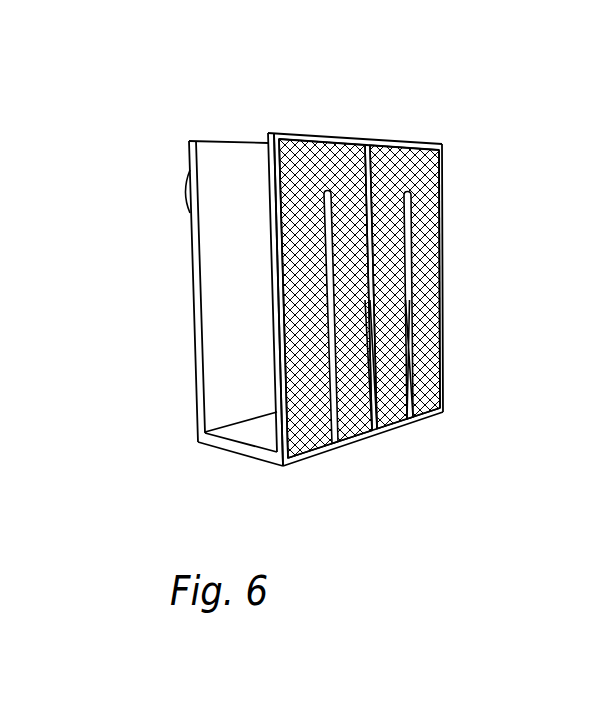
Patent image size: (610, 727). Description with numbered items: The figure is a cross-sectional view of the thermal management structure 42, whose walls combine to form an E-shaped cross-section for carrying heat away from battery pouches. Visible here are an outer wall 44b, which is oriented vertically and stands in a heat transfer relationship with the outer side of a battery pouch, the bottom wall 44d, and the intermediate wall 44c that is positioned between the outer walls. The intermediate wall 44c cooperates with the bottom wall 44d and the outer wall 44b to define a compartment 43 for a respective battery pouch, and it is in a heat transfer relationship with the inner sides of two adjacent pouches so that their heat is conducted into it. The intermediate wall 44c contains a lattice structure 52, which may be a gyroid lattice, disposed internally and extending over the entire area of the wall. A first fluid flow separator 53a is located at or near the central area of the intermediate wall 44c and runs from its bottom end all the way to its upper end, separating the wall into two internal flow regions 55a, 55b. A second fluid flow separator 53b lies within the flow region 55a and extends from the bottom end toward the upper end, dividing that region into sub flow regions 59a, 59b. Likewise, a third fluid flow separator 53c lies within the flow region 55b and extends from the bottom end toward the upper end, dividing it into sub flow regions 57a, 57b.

The thermal management structure 42 is at (280, 118).
The compartment 43 is at (228, 276).
The outer wall 44b is at (203, 150).
The intermediate wall 44c is at (398, 138).
The bottom wall 44d is at (235, 443).
The lattice structure 52 is at (337, 158).
The fluid flow separator 53a is at (372, 392).
The fluid flow separator 53b is at (332, 412).
The fluid flow separator 53c is at (408, 330).
The flow region 55a is at (305, 180).
The flow region 55b is at (413, 158).
The sub flow region 57a is at (387, 290).
The sub flow region 57b is at (423, 222).
The sub flow region 59a is at (293, 312).
The sub flow region 59b is at (337, 372).